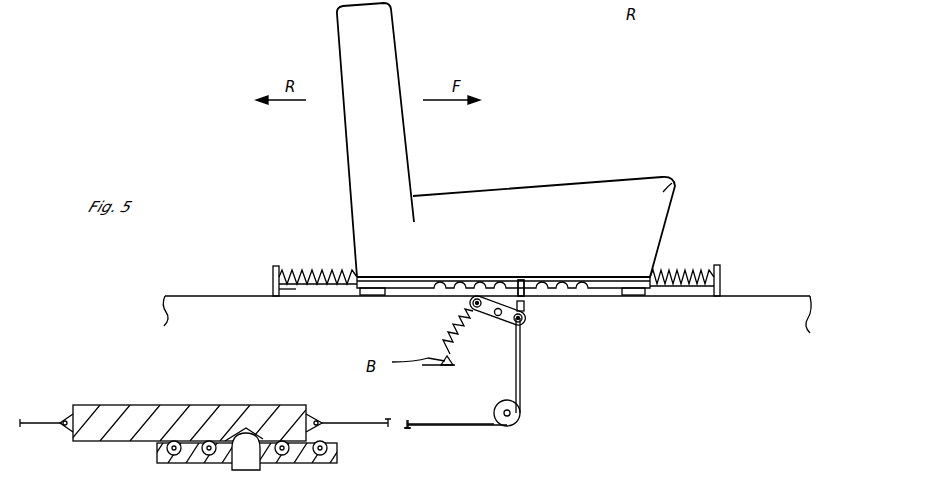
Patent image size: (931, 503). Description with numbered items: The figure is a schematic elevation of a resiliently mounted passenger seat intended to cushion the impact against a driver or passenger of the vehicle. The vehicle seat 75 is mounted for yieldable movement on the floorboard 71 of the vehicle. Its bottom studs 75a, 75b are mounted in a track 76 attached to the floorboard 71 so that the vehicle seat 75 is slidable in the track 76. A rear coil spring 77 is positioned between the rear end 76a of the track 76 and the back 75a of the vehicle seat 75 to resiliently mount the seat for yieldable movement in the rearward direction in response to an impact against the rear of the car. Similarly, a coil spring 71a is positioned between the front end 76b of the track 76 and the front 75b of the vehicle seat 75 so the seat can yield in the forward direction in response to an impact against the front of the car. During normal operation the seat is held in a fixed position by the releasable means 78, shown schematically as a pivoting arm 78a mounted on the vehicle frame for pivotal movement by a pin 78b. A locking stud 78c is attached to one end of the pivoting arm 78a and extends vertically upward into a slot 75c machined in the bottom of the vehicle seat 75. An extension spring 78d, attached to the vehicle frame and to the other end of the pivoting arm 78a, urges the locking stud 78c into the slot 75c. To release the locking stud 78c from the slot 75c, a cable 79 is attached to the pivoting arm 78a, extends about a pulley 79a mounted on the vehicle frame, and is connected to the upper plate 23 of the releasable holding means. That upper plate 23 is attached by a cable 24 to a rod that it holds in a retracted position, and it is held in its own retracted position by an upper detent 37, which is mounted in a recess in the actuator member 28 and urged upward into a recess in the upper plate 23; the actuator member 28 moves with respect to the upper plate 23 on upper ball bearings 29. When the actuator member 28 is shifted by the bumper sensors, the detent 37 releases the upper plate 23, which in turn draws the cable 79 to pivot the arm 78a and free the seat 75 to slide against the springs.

The floorboard 71 is at (760, 294).
The front spring 71a is at (675, 270).
The vehicle seat 75 is at (668, 190).
The bottom stud 75a is at (346, 138).
The bottom stud 75b is at (677, 200).
The slot 75c is at (521, 280).
The track 76 is at (273, 288).
The rear end of the track 76a is at (272, 278).
The front end of the track 76b is at (723, 270).
The rear coil spring 77 is at (320, 270).
The releasable means 78 is at (468, 305).
The pivoting arm 78a is at (500, 322).
The pin 78b is at (508, 310).
The locking stud 78c is at (527, 307).
The extension spring 78d is at (447, 335).
The cable 79 is at (522, 380).
The pulley 79a is at (517, 420).
The upper plate 23 is at (113, 412).
The cable 24 is at (43, 420).
The actuator member 28 is at (337, 455).
The upper ball bearings 29 is at (175, 441).
The upper detent 37 is at (250, 429).